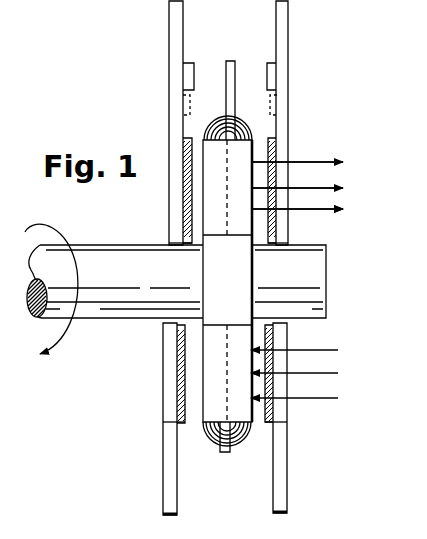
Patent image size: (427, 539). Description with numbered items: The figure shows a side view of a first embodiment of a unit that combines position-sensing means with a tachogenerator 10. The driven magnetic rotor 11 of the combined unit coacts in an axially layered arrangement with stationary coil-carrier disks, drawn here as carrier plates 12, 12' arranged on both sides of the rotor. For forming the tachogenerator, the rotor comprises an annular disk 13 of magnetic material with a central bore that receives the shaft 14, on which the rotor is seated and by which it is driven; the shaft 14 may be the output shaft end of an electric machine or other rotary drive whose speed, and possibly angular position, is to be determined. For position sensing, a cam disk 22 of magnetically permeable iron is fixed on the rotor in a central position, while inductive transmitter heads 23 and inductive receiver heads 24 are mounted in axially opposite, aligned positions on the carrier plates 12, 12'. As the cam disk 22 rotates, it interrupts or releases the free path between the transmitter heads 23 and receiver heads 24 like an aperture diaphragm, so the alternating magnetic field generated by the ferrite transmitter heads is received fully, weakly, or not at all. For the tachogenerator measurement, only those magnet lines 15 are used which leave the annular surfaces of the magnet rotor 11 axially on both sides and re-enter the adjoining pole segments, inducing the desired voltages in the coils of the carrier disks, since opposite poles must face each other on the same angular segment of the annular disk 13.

The tachogenerator 10 is at (305, 132).
The magnetic rotor 11 is at (213, 130).
The coil-carrier disk 12 is at (304, 257).
The carrier plate 12' is at (149, 258).
The annular disk 13 is at (210, 410).
The shaft 14 is at (103, 322).
The magnet lines 15 is at (318, 162).
The cam disk 22 is at (228, 61).
The inductive transmitter heads 23 is at (187, 70).
The inductive receiver heads 24 is at (270, 75).